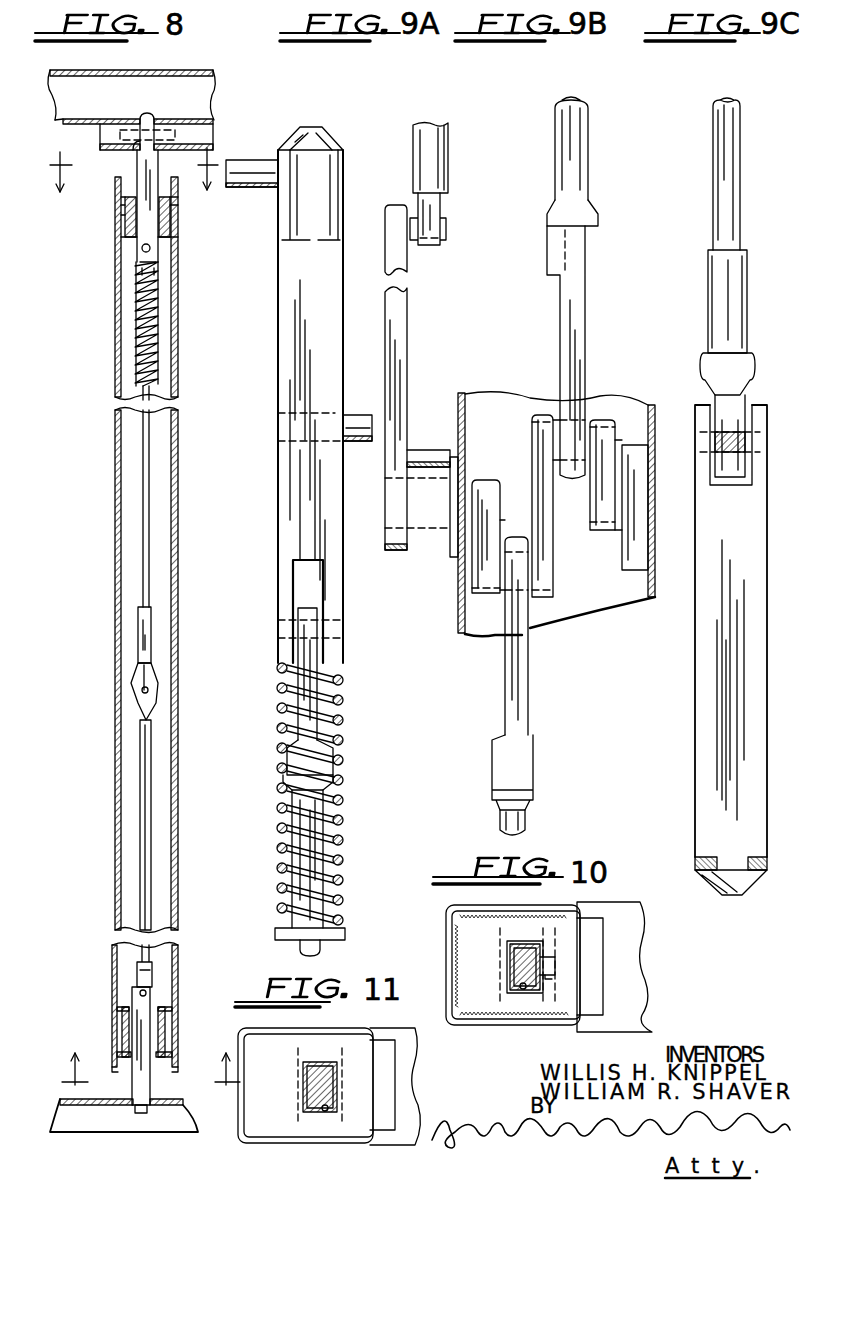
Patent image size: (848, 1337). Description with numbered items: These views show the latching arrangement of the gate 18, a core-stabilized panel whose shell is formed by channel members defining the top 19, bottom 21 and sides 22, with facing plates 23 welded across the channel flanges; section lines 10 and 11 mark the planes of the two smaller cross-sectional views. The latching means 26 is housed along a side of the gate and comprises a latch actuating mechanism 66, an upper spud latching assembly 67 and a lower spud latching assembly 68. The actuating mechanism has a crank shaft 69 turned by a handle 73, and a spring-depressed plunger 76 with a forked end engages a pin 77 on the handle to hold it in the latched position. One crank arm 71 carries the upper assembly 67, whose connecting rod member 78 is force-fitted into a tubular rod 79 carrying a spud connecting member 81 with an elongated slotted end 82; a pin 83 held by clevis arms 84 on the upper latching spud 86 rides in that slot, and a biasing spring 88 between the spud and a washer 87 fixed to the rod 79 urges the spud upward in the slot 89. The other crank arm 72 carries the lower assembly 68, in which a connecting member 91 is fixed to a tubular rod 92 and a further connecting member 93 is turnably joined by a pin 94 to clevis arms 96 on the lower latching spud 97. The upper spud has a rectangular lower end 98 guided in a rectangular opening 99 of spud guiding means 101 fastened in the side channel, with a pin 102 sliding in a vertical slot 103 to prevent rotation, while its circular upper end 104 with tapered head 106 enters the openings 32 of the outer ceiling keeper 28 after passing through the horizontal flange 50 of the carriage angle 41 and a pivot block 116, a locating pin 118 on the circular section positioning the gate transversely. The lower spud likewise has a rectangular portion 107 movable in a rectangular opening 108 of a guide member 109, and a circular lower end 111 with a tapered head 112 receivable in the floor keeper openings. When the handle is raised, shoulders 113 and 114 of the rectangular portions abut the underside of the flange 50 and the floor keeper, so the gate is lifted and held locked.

In FIG. 8, the section line 10— 10 is at (126, 162).
In FIG. 8, the section line 11— 11 is at (155, 1076).
In FIG. 8, the gate 18 is at (180, 812).
In FIG. 9B, the gate 18 is at (652, 410).
In FIG. 8, the top channel member 19 is at (178, 178).
In FIG. 8, the bottom channel member 21 is at (172, 1066).
In FIG. 10, the side channel member 22 is at (575, 1026).
In FIG. 11, the side channel member 22 is at (368, 1030).
In FIG. 8, the facing plates 23 is at (178, 980).
In FIG. 10, the facing plates 23 is at (620, 905).
In FIG. 11, the facing plates 23 is at (393, 1028).
In FIG. 8, the latching means 26 is at (152, 592).
In FIG. 8, the outer ceiling keeper 28 is at (72, 96).
In FIG. 8, the keeper openings 32 is at (120, 119).
In FIG. 8, the carriage angle 41 is at (102, 142).
In FIG. 8, the horizontal flange 50 is at (214, 140).
In FIG. 8, the latch actuating mechanism 66 is at (128, 683).
In FIG. 8, the upper spud latching assembly 67 is at (152, 390).
In FIG. 9A, the upper spud latching assembly 67 is at (350, 320).
In FIG. 9B, the upper spud latching assembly 67 is at (592, 172).
In FIG. 8, the lower spud latching assembly 68 is at (150, 860).
In FIG. 9B, the lower spud latching assembly 68 is at (530, 680).
In FIG. 9C, the lower spud latching assembly 68 is at (692, 627).
In FIG. 9B, the crank shaft 69 is at (493, 480).
In FIG. 9B, the crank arm 71 is at (562, 425).
In FIG. 9B, the crank arm 72 is at (503, 598).
In FIG. 9B, the handle 73 is at (400, 352).
In FIG. 9B, the spring-depressed plunger 76 is at (432, 168).
In FIG. 9B, the inwardly projecting pin 77 is at (441, 228).
In FIG. 9B, the connecting rod member 78 is at (583, 286).
In FIG. 9A, the tubular rod 79 is at (300, 946).
In FIG. 9B, the tubular rod 79 is at (591, 148).
In FIG. 9A, the spud connecting member 81 is at (318, 760).
In FIG. 9A, the elongated slotted end 82 is at (325, 688).
In FIG. 8, the pin 83 is at (152, 248).
In FIG. 9A, the pin 83 is at (322, 625).
In FIG. 9A, the clevis arms 84 is at (280, 655).
In FIG. 8, the upper latching spud 86 is at (156, 158).
In FIG. 9A, the upper latching spud 86 is at (292, 460).
In FIG. 10, the upper latching spud 86 is at (510, 968).
In FIG. 9A, the washer 87 is at (336, 932).
In FIG. 8, the biasing spring 88 is at (135, 280).
In FIG. 9A, the biasing spring 88 is at (336, 826).
In FIG. 8, the slot 89 is at (156, 266).
In FIG. 9A, the slot 89 is at (300, 703).
In FIG. 9B, the connecting member 91 is at (518, 735).
In FIG. 9B, the tubular rod 92 is at (522, 820).
In FIG. 9C, the tubular rod 92 is at (730, 195).
In FIG. 9C, the connecting member 93 is at (735, 330).
In FIG. 9C, the pin 94 is at (748, 437).
In FIG. 9C, the clevis arms 96 is at (708, 455).
In FIG. 9C, the lower latching spud 97 is at (704, 730).
In FIG. 9A, the rectangular lower end 98 is at (290, 385).
In FIG. 10, the rectangular lower end 98 is at (512, 947).
In FIG. 10, the rectangular opening 99 is at (520, 988).
In FIG. 8, the spud guiding means 101 is at (126, 214).
In FIG. 10, the spud guiding means 101 is at (557, 952).
In FIG. 8, the pin 102 is at (125, 233).
In FIG. 9A, the pin 102 is at (362, 418).
In FIG. 10, the pin 102 is at (558, 966).
In FIG. 10, the vertical slot 103 is at (548, 978).
In FIG. 8, the upper end 104 is at (149, 114).
In FIG. 9A, the upper end 104 is at (330, 185).
In FIG. 9A, the tapered head 106 is at (318, 133).
In FIG. 9C, the rectangular portion 107 is at (714, 698).
In FIG. 11, the rectangular portion 107 is at (305, 1080).
In FIG. 11, the rectangular opening 108 is at (325, 1112).
In FIG. 11, the guide member 109 is at (298, 1096).
In FIG. 9C, the lower end 111 is at (714, 882).
In FIG. 9C, the tapered head 112 is at (737, 893).
In FIG. 8, the shoulder 113 is at (135, 143).
In FIG. 9A, the shoulder 113 is at (290, 232).
In FIG. 8, the shoulder 114 is at (141, 1114).
In FIG. 9C, the shoulder 114 is at (700, 865).
In FIG. 8, the pivot block 116 is at (120, 133).
In FIG. 9A, the locating pin 118 is at (256, 168).